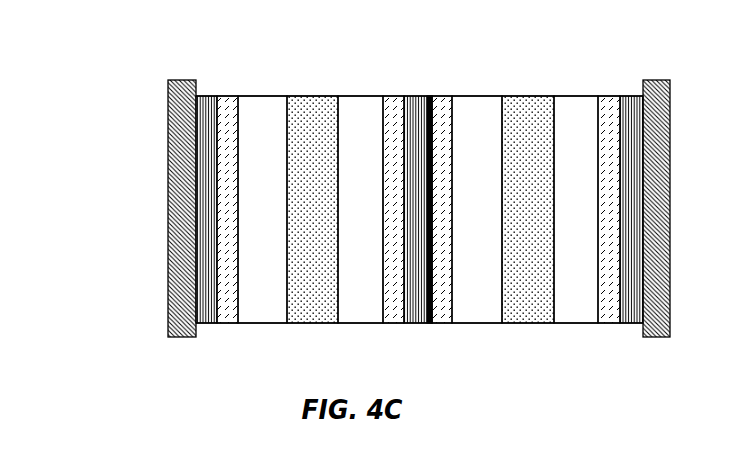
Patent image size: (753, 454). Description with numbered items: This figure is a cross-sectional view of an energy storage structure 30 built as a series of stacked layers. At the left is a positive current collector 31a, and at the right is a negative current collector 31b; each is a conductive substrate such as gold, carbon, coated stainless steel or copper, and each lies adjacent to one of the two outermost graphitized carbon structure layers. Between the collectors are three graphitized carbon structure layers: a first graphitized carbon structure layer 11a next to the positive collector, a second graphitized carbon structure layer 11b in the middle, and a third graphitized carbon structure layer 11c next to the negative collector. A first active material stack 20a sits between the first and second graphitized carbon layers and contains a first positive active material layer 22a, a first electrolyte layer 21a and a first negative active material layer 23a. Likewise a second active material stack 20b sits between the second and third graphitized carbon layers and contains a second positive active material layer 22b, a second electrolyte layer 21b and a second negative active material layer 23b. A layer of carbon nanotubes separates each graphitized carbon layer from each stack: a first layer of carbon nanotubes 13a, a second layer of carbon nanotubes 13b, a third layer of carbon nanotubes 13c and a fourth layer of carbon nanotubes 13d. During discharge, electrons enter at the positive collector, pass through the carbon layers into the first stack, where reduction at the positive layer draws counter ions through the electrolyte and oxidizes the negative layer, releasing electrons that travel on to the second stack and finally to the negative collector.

The energy storage structure 30 is at (111, 169).
The positive current collector 31a is at (178, 92).
The negative current collector 31b is at (658, 92).
The first graphitized carbon structure layer 11a is at (201, 98).
The second graphitized carbon structure layer 11b is at (422, 98).
The third graphitized carbon structure layer 11c is at (630, 98).
The first layer of carbon nanotubes 13a is at (232, 98).
The second layer of carbon nanotubes 13b is at (395, 97).
The third layer of carbon nanotubes 13c is at (447, 98).
The fourth layer of carbon nanotubes 13d is at (608, 97).
The first active material stack 20a is at (313, 212).
The second active material stack 20b is at (528, 212).
The first electrolyte layer 21a is at (312, 100).
The second electrolyte layer 21b is at (527, 98).
The first positive active material layer 22a is at (263, 98).
The second positive active material layer 22b is at (478, 98).
The first negative active material layer 23a is at (360, 98).
The second negative active material layer 23b is at (575, 98).